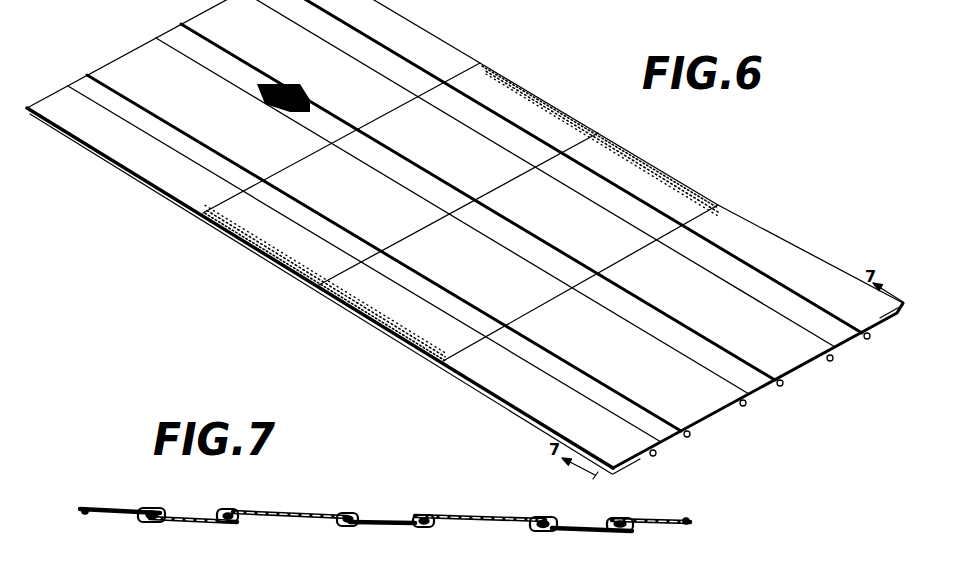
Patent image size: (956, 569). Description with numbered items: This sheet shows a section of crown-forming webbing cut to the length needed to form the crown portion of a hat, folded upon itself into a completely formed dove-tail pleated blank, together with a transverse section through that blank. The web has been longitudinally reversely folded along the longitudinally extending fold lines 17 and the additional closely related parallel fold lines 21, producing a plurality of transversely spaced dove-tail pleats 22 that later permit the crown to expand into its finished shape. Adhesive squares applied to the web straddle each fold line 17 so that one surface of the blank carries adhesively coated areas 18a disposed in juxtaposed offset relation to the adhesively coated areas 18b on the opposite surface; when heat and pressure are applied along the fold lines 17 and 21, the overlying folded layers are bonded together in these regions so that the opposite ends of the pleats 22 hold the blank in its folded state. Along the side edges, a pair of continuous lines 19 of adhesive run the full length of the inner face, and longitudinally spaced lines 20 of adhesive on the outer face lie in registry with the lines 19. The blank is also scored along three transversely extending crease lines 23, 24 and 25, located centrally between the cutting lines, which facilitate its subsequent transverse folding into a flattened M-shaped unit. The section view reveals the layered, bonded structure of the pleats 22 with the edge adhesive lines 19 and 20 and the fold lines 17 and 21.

In FIG. 7, the longitudinally extending fold line 17 is at (163, 512).
In FIG. 7, the adhesively coated areas 18a is at (150, 509).
In FIG. 7, the adhesively coated areas 18b is at (550, 534).
In FIG. 7, the lines of adhesive 19 is at (83, 516).
In FIG. 6, the lines of adhesive 20 is at (537, 97).
In FIG. 7, the lines of adhesive 20 is at (85, 508).
In FIG. 7, the longitudinally extending parallel fold lines 21 is at (335, 521).
In FIG. 6, the dove-tail pleats 22 is at (710, 351).
In FIG. 6, the transversely extending crease line 23 is at (288, 167).
In FIG. 6, the transversely extending crease line 24 is at (402, 243).
In FIG. 6, the transversely extending crease line 25 is at (516, 318).